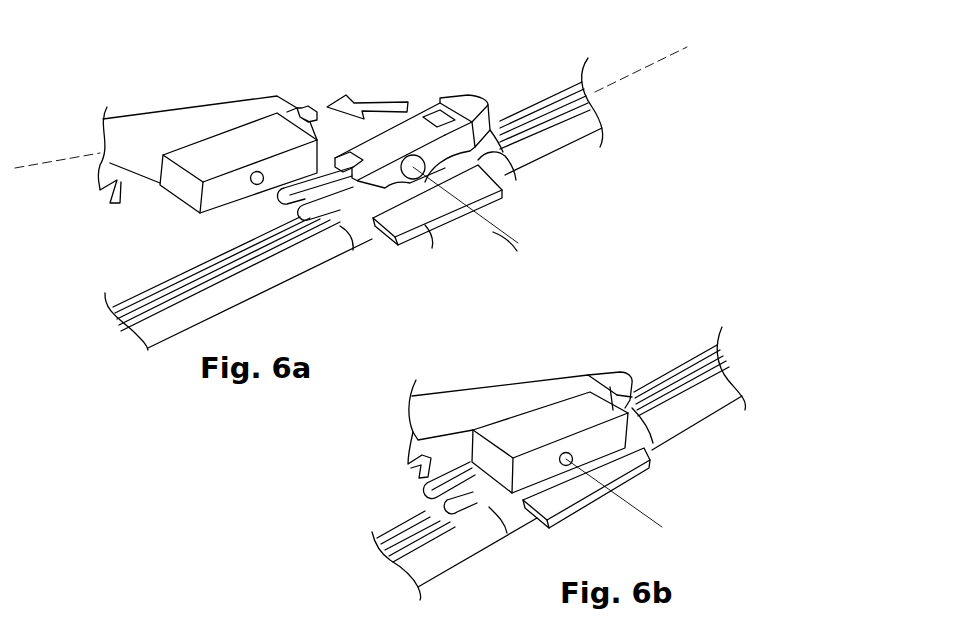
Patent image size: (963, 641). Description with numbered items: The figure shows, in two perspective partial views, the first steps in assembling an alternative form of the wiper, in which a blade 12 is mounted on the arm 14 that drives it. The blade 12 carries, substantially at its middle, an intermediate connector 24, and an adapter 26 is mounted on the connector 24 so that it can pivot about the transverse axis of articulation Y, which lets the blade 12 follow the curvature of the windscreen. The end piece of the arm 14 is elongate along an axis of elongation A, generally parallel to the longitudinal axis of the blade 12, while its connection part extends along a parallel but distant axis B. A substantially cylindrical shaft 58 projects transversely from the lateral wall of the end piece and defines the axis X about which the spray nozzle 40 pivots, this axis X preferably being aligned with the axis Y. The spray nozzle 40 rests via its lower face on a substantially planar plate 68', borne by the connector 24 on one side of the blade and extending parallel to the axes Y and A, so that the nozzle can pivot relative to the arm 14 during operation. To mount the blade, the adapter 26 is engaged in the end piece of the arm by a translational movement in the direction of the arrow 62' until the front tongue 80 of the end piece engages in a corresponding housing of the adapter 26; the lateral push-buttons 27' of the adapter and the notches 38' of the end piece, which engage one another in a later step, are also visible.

In FIG. 6A, the blade 12 is at (300, 294).
In FIG. 6B, the blade 12 is at (559, 463).
In FIG. 6A, the arm 14 is at (132, 109).
In FIG. 6A, the intermediate connector 24 is at (502, 177).
In FIG. 6A, the adapter 26 is at (467, 98).
In FIG. 6B, the lateral push-buttons 27' is at (463, 543).
In FIG. 6B, the notches 38' is at (501, 425).
In FIG. 6A, the spray nozzle 40 is at (190, 195).
In FIG. 6B, the spray nozzle 40 is at (580, 412).
In FIG. 6A, the shaft 58 is at (257, 172).
In FIG. 6A, the arrow 62' is at (372, 87).
In FIG. 6A, the plate 68' is at (437, 231).
In FIG. 6B, the plate 68' is at (586, 501).
In FIG. 6A, the front tongue 80 is at (313, 106).
In FIG. 6A, the axis of elongation A is at (672, 52).
In FIG. 6A, the axis B is at (33, 164).
In FIG. 6B, the axis of pivoting X is at (648, 513).
In FIG. 6A, the axis of articulation Y is at (503, 235).